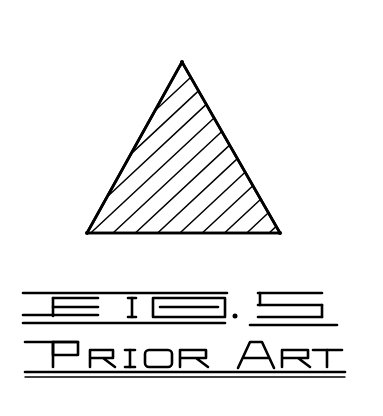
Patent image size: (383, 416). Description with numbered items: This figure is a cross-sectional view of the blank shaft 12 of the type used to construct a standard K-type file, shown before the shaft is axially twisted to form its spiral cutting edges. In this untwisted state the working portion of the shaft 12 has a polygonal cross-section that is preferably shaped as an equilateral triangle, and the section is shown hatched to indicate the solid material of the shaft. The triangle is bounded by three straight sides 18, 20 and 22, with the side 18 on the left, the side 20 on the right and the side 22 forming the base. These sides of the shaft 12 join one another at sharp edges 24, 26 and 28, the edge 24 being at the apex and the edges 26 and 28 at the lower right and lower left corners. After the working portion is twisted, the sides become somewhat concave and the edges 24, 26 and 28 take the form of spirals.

The shaft 12 is at (190, 113).
The side 18 is at (138, 135).
The side 20 is at (220, 128).
The side 22 is at (183, 234).
The sharp edge 24 is at (182, 62).
The sharp edge 26 is at (282, 235).
The sharp edge 28 is at (87, 234).